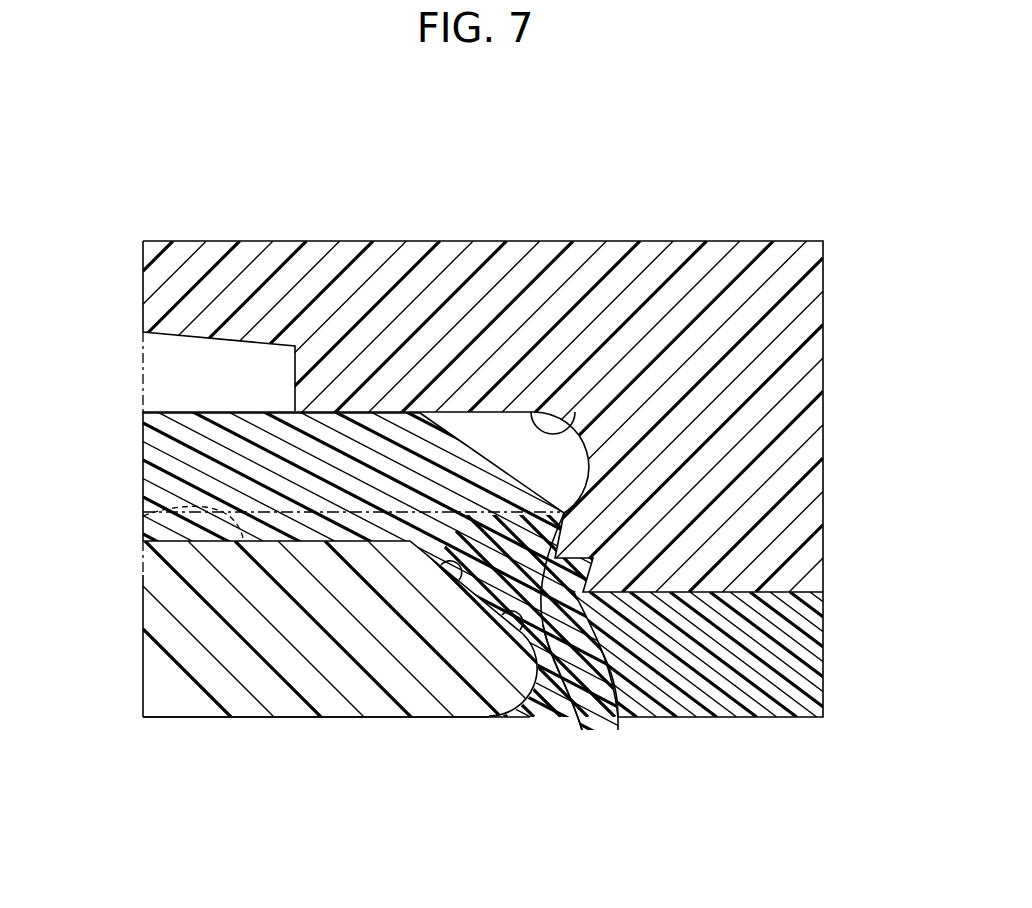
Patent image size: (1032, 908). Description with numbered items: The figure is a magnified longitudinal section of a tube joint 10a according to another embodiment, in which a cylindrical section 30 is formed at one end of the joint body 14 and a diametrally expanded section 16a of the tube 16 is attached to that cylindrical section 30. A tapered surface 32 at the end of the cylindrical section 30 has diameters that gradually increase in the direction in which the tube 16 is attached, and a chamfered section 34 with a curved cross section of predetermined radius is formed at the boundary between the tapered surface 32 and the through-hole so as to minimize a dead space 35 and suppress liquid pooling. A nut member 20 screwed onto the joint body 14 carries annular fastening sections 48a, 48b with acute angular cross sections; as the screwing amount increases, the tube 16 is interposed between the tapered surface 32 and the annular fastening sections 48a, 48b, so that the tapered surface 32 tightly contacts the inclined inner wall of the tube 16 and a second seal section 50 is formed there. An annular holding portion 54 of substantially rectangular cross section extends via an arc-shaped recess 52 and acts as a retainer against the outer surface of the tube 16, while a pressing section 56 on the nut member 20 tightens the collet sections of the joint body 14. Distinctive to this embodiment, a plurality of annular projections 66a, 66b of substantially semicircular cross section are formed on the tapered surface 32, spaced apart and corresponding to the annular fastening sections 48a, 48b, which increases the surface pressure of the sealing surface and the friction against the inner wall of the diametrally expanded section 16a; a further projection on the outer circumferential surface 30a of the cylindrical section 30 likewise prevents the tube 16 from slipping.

The tube joint 10a is at (742, 167).
The joint body 14 is at (143, 652).
The tube 16 is at (803, 664).
The diametrally expanded section 16a is at (233, 445).
The nut member 20 is at (613, 285).
The cylindrical section 30 is at (414, 690).
The outer circumferential surface 30a is at (150, 513).
The tapered surface 32 is at (566, 512).
The chamfered section 34 is at (524, 702).
The dead space 35 is at (548, 700).
The annular fastening section 48a is at (582, 730).
The annular fastening section 48b is at (618, 730).
The second seal section 50 is at (566, 428).
The recess 52 is at (528, 411).
The annular holding portion 54 is at (328, 398).
The pressing section 56 is at (200, 343).
The projection 66a is at (455, 594).
The projection 66b is at (506, 630).